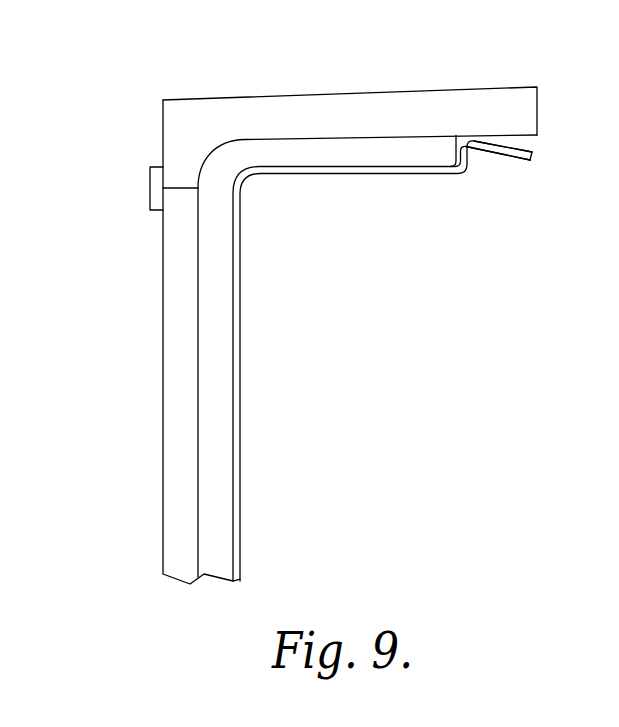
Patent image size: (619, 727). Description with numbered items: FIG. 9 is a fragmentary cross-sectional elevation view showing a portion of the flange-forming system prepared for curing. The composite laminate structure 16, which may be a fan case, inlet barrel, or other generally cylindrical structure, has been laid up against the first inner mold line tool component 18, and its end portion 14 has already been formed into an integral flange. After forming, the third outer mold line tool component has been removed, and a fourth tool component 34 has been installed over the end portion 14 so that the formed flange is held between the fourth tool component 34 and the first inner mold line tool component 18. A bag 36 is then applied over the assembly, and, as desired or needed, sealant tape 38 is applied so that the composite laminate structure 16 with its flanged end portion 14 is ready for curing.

The end portion 14 is at (322, 153).
The composite laminate structure 16 is at (220, 456).
The first inner mold line tool component 18 is at (178, 417).
The fourth tool component 34 is at (433, 108).
The bag 36 is at (499, 192).
The sealant tape 38 is at (136, 181).